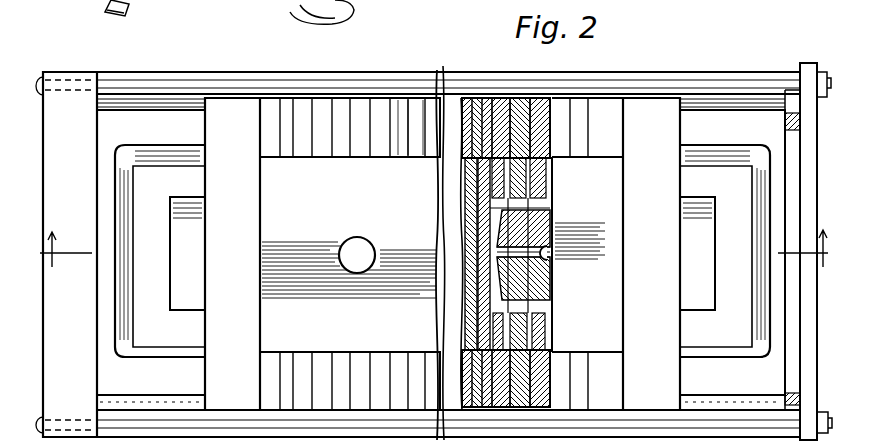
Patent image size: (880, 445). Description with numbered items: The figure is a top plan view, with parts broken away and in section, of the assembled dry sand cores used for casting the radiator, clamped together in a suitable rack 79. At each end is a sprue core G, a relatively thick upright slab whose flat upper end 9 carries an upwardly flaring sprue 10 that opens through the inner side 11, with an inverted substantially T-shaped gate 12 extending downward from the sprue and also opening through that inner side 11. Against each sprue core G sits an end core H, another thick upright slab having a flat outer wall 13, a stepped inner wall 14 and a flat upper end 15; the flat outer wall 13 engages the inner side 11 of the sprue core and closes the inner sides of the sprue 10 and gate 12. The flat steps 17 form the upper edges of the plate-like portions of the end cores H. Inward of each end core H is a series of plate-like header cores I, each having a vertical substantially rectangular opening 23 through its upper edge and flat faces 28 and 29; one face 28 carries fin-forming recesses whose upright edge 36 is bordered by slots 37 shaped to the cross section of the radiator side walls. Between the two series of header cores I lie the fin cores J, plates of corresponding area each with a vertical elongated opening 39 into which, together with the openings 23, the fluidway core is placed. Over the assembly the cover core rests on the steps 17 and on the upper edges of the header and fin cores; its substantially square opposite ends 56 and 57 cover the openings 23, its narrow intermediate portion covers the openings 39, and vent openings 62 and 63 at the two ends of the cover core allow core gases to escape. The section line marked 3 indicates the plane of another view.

The rack 79 is at (62, 98).
The sprue core G is at (140, 127).
The upper end 9 is at (700, 123).
The sprue 10 is at (117, 172).
The inner side 11 is at (202, 143).
The gate 12 is at (193, 280).
The outer wall 13 is at (207, 213).
The upper end 15 is at (248, 305).
The inner wall 14 is at (267, 110).
The step 17 is at (283, 113).
The fin core J is at (423, 113).
The end core H is at (257, 203).
The end of cover core body 56 is at (330, 216).
The opening 62 is at (358, 250).
The header core I is at (497, 103).
The upright edge 36 is at (497, 163).
The slot 37 is at (467, 342).
The vertical elongated opening 39 is at (466, 238).
The vertical rectangular opening 23 is at (515, 202).
The opening 63 is at (552, 253).
The face 28 is at (532, 128).
The face 29 is at (555, 100).
The end of cover core body 57 is at (603, 163).
The section line 3 is at (434, 259).